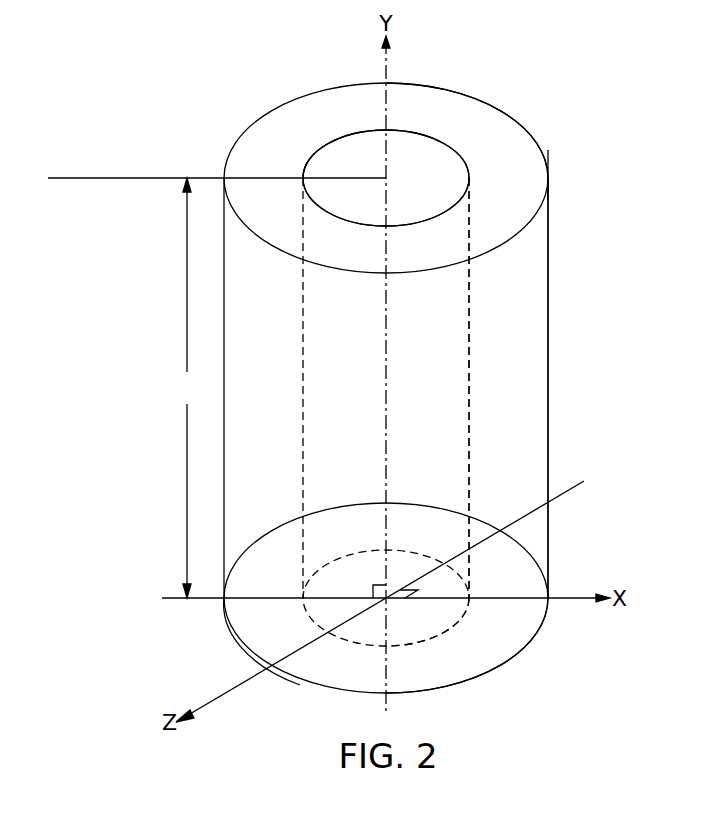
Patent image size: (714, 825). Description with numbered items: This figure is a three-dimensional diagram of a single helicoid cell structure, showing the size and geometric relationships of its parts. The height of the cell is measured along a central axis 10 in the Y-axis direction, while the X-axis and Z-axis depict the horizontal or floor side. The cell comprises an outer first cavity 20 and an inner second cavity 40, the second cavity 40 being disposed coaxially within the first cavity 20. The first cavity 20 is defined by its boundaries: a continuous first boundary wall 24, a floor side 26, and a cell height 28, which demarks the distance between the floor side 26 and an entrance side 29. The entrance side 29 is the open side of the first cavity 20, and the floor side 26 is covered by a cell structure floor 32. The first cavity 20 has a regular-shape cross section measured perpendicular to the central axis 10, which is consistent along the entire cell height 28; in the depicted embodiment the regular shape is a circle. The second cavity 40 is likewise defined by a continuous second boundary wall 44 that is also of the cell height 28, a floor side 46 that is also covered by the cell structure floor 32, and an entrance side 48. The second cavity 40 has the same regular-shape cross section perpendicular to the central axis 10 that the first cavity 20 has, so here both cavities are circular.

The central axis 10 is at (386, 72).
The outer first cavity 20 is at (505, 127).
The continuous first boundary wall 24 is at (548, 390).
The floor side 26 is at (533, 641).
The cell height 28 is at (186, 388).
The entrance side 29 is at (548, 165).
The cell structure floor 32 is at (243, 620).
The inner second cavity 40 is at (363, 148).
The continuous second boundary wall 44 is at (469, 423).
The floor side 46 is at (445, 634).
The entrance side 48 is at (306, 167).